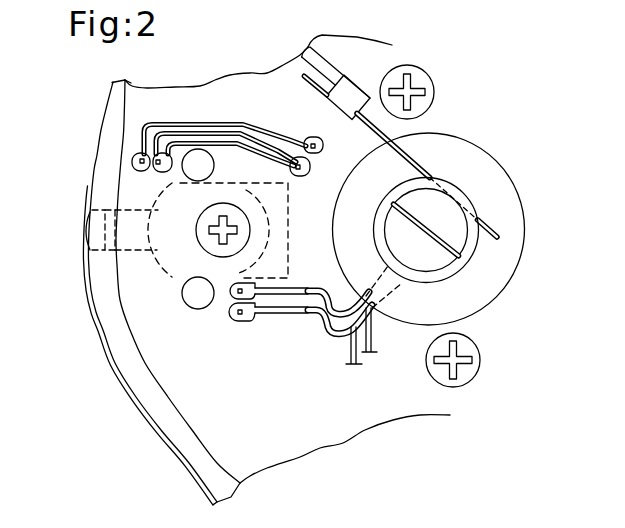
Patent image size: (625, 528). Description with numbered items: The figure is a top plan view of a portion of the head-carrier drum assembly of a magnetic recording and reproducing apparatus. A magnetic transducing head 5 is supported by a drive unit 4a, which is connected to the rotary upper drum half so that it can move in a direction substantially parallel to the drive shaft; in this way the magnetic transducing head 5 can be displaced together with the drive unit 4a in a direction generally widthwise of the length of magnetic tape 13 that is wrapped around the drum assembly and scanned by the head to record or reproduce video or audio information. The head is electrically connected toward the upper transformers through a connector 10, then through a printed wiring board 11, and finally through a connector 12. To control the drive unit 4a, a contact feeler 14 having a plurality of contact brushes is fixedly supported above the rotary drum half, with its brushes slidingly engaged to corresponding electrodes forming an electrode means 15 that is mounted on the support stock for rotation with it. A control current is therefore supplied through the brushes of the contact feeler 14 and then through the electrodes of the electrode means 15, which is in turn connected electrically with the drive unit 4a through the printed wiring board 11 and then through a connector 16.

The drive unit 4a is at (172, 277).
The magnetic transducing head 5 is at (85, 237).
The connector 10 is at (110, 189).
The printed wiring board 11 is at (241, 318).
The connector 12 is at (297, 160).
The magnetic tape 13 is at (110, 364).
The contact feeler 14 is at (423, 177).
The electrode means 15 is at (453, 279).
The connector 16 is at (228, 299).